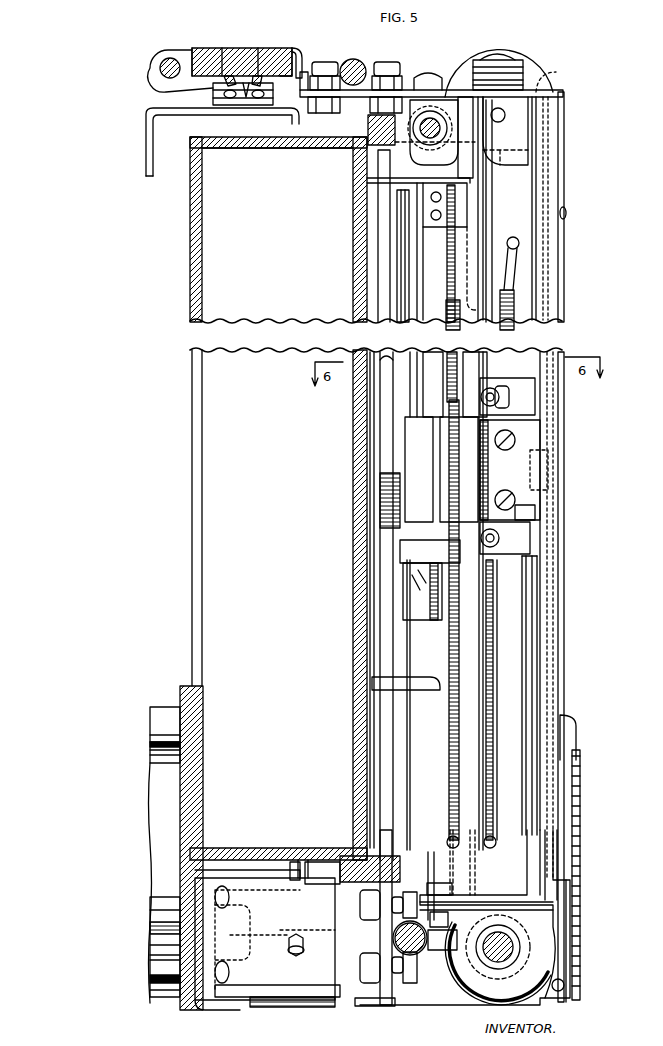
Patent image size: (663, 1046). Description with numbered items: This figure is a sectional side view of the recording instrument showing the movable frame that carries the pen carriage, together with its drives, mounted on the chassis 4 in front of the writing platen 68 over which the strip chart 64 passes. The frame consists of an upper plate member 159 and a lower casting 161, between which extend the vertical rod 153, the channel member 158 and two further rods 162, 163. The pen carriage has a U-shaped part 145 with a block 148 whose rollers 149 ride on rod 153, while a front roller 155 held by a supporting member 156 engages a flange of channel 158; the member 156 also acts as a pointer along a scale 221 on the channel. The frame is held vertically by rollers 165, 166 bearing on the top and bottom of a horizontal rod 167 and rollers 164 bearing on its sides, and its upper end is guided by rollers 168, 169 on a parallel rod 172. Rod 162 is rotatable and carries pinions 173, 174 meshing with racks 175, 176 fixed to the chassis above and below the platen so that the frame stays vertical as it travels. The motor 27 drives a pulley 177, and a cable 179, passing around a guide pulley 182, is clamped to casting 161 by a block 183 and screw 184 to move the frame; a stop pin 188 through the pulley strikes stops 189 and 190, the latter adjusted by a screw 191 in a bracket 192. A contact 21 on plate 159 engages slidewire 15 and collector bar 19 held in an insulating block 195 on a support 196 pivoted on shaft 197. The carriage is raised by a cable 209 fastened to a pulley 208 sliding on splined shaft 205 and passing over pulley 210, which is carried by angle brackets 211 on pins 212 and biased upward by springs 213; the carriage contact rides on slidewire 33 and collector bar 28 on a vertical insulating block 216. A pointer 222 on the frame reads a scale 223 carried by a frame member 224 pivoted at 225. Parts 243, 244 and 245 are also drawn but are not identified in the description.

The chassis 4 is at (358, 492).
The slidewire 15 is at (258, 48).
The collector bar 19 is at (228, 48).
The contact 21 is at (257, 90).
The motor 27 is at (165, 716).
The slidewire 28 is at (450, 310).
The collector bar 33 is at (502, 292).
The chart 64 is at (372, 596).
The platen 68 is at (362, 577).
The U-shaped part 145 is at (530, 512).
The block 148 is at (520, 395).
The rollers 149 is at (504, 398).
The rod 153 is at (480, 212).
The front roller 155 is at (548, 455).
The supporting member 156 is at (545, 440).
The channel member 158 is at (552, 574).
The upper plate member 159 is at (174, 117).
The lower casting 161 is at (545, 900).
The rod 162 is at (383, 246).
The rod 163 is at (400, 290).
The rollers 164 is at (420, 950).
The roller 165 is at (414, 978).
The roller 166 is at (416, 898).
The rod 167 is at (436, 952).
The roller 168 is at (386, 62).
The roller 169 is at (318, 62).
The rod 172 is at (355, 59).
The pinion 173 is at (372, 116).
The pinion 174 is at (370, 876).
The rack 175 is at (320, 137).
The rack 176 is at (338, 870).
The pulley 177 is at (290, 878).
The cable 179 is at (248, 1002).
The guide pulley 182 is at (270, 1000).
The block 183 is at (388, 1005).
The screw 184 is at (378, 1008).
The stop pin 188 is at (265, 939).
The stop 189 is at (246, 870).
The stop 190 is at (302, 860).
The screw 191 is at (288, 943).
The bracket 192 is at (330, 1010).
The insulating block 195 is at (192, 60).
The support 196 is at (262, 48).
The shaft 197 is at (166, 66).
The splined shaft 205 is at (504, 935).
The pulley 208 is at (540, 950).
The cable 209 is at (452, 868).
The pulley 210 is at (533, 78).
The angle brackets 211 is at (515, 122).
The pins 212 is at (500, 58).
The springs 213 is at (525, 68).
The insulating block 216 is at (515, 634).
The scale 221 is at (564, 250).
The pointer 222 is at (568, 716).
The scale 223 is at (582, 820).
The frame member 224 is at (568, 920).
The pivot 225 is at (562, 982).
The bracket 243 is at (462, 112).
The pin 244 is at (430, 118).
The housing 245 is at (420, 104).